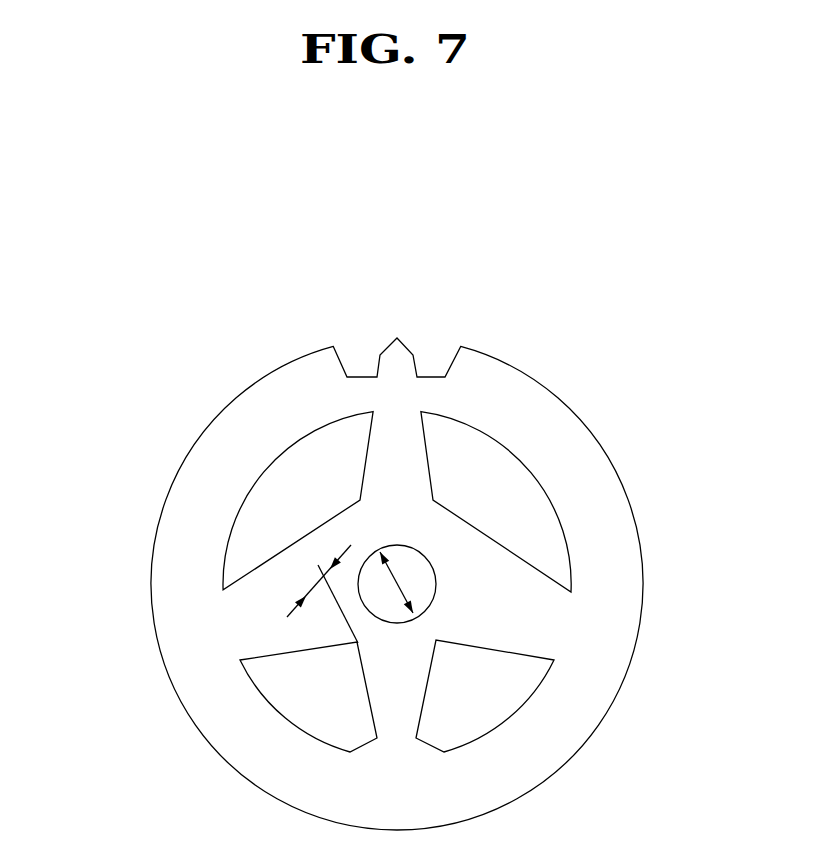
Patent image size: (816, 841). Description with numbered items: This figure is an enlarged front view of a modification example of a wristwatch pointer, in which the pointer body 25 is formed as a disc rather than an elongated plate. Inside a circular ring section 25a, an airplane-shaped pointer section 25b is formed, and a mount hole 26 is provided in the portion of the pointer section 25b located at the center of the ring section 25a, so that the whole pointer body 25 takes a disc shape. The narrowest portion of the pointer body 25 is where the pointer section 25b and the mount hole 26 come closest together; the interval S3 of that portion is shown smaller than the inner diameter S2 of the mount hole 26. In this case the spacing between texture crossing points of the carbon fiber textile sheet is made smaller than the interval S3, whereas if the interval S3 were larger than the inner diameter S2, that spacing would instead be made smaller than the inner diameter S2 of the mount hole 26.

The pointer body 25 is at (217, 395).
The ring section 25a is at (178, 542).
The pointer section 25b is at (408, 483).
The mount hole 26 is at (422, 573).
The inner diameter of the mount hole S2 is at (388, 620).
The interval of the narrowest portion S3 is at (340, 626).